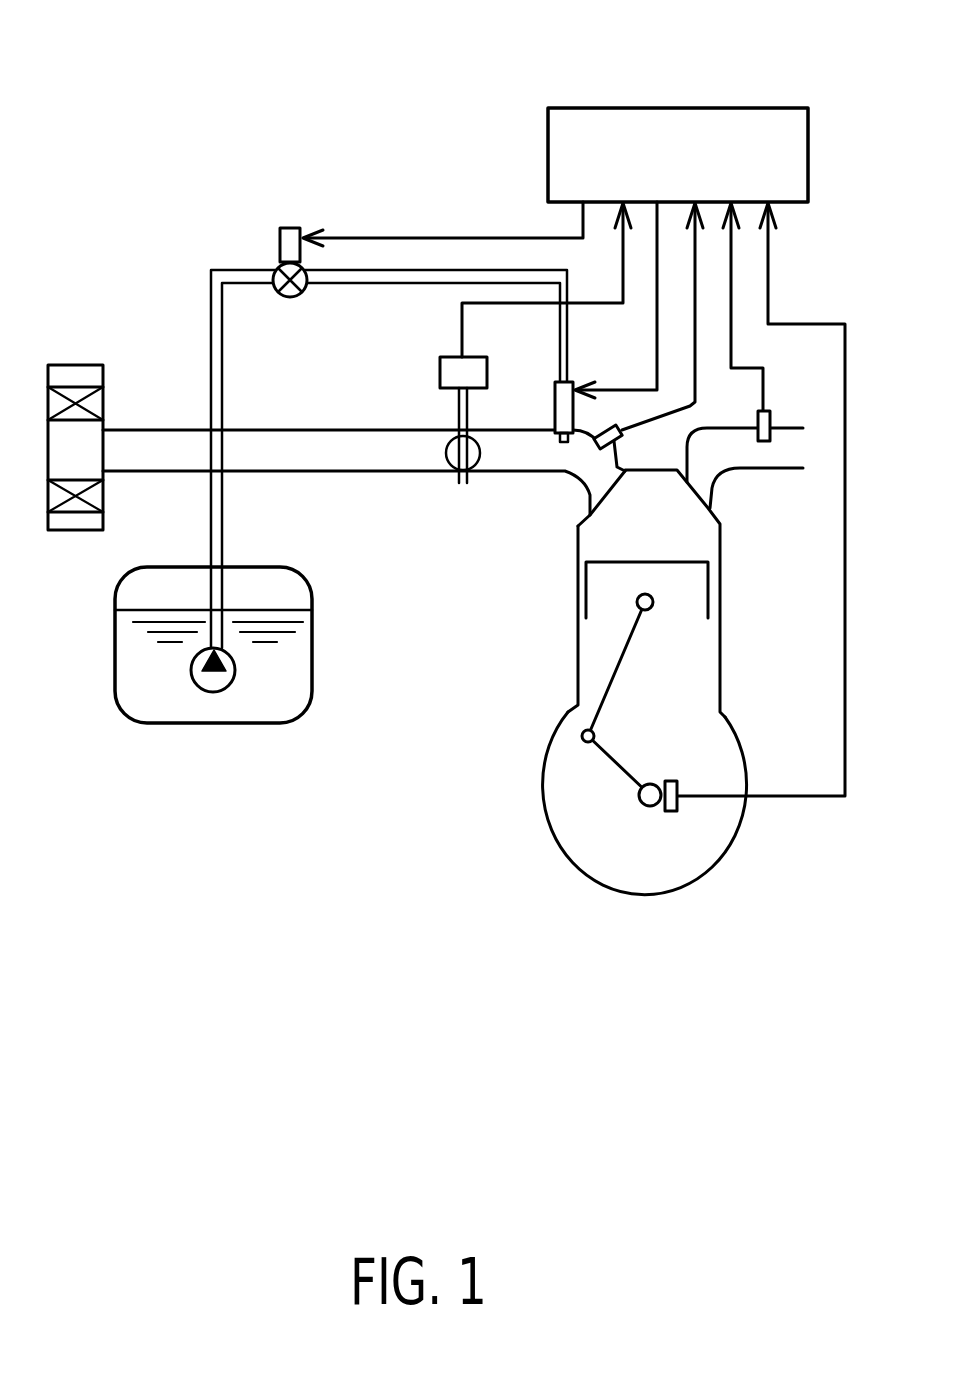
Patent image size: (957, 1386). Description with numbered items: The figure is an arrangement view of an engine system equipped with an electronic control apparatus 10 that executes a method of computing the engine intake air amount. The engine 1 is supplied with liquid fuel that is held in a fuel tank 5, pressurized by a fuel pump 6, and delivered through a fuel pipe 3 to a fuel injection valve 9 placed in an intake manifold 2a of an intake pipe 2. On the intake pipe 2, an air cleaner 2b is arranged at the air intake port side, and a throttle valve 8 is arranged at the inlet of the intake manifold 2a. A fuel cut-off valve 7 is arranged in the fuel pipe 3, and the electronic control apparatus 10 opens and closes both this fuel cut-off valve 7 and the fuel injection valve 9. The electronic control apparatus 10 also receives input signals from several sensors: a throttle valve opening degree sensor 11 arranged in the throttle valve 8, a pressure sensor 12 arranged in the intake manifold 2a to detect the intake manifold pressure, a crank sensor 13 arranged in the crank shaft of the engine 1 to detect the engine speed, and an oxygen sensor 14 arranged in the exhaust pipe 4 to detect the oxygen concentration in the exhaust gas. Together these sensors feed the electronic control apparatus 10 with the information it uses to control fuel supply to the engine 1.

The engine 1 is at (713, 868).
The intake pipe 2 is at (270, 430).
The intake manifold 2a is at (578, 476).
The air cleaner 2b is at (68, 532).
The fuel pipe 3 is at (223, 546).
The exhaust pipe 4 is at (743, 468).
The fuel tank 5 is at (190, 723).
The fuel pump 6 is at (225, 693).
The fuel cut-off valve 7 is at (280, 228).
The throttle valve 8 is at (457, 485).
The fuel injection valve 9 is at (563, 444).
The electronic control apparatus 10 is at (703, 108).
The throttle valve opening degree sensor 11 is at (440, 372).
The pressure sensor 12 is at (603, 449).
The crank sensor 13 is at (680, 782).
The oxygen sensor 14 is at (767, 442).